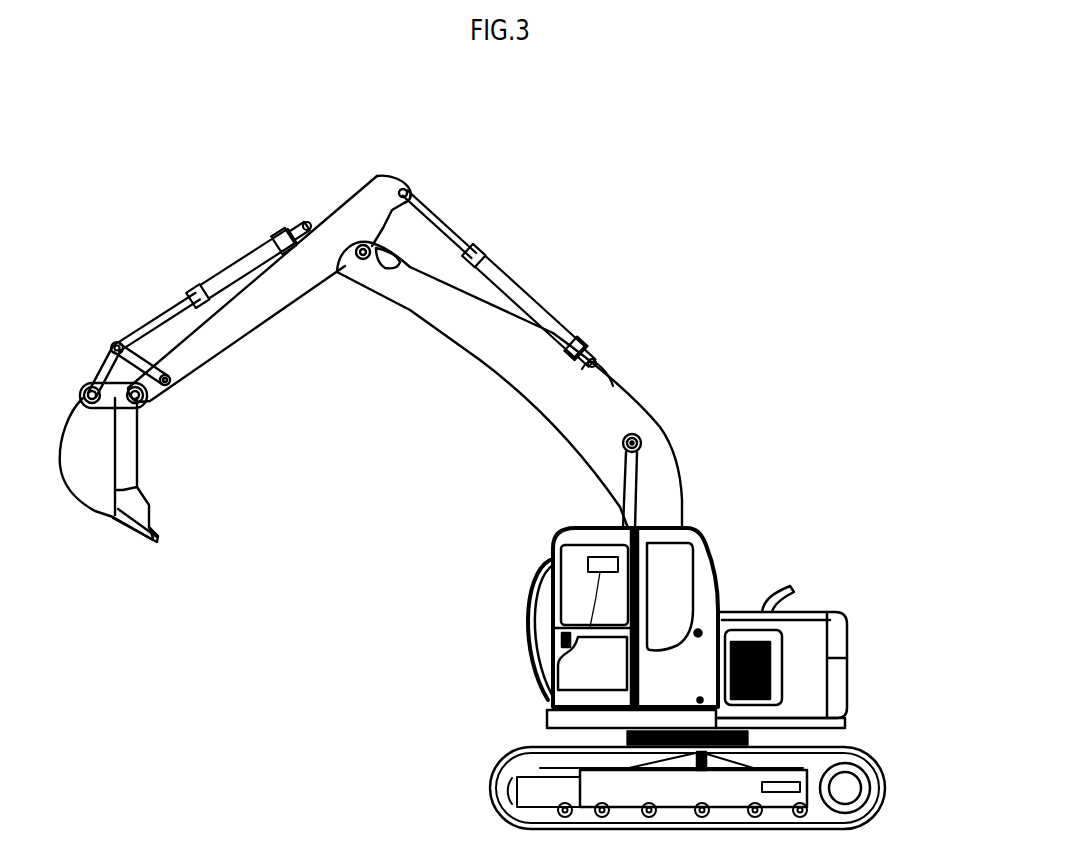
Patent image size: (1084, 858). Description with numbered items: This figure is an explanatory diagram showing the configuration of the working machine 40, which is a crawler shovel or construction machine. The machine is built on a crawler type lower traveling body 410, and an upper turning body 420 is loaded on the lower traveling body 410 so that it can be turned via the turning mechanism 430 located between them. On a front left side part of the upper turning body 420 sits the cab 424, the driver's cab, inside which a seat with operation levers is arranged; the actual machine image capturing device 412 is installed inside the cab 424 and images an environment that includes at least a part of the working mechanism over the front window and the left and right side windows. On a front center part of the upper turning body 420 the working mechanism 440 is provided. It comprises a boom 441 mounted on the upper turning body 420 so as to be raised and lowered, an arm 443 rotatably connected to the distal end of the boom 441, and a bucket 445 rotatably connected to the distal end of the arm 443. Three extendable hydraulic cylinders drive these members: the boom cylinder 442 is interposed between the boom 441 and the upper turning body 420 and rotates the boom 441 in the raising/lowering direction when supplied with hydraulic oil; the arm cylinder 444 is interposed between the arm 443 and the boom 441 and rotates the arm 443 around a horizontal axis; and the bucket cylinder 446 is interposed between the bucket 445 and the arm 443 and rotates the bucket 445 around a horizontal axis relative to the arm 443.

The working machine 40 is at (717, 144).
The lower traveling body 410 is at (508, 752).
The upper turning body 420 is at (866, 640).
The cab 424 is at (720, 514).
The actual machine image capturing device 412 is at (600, 558).
The turning mechanism 430 is at (772, 737).
The working mechanism 440 is at (493, 205).
The boom 441 is at (665, 463).
The boom cylinder 442 is at (620, 507).
The arm 443 is at (260, 318).
The arm cylinder 444 is at (530, 294).
The bucket 445 is at (92, 492).
The bucket cylinder 446 is at (250, 252).